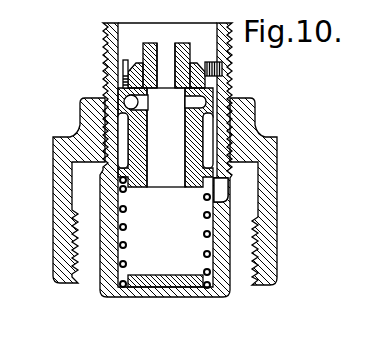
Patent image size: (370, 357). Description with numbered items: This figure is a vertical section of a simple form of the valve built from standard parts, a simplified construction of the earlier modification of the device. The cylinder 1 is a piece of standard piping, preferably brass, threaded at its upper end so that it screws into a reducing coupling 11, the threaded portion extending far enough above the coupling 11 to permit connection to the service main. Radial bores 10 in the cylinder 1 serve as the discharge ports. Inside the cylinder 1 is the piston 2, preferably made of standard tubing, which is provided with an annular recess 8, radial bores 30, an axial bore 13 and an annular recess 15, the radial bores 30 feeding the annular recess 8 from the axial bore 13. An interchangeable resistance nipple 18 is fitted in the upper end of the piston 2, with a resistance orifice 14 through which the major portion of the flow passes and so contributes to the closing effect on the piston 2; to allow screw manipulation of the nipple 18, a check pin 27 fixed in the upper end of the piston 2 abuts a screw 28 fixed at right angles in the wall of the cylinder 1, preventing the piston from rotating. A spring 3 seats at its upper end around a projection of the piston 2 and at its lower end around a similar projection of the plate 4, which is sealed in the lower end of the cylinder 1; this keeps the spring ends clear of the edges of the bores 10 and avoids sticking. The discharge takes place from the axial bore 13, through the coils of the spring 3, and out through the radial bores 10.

The cylinder 1 is at (100, 268).
The piston 2 is at (133, 152).
The spring 3 is at (128, 245).
The plate 4 is at (128, 293).
The annular recess 8 is at (124, 98).
The radial bores 10 is at (218, 192).
The reducing coupling 11 is at (55, 197).
The axial bore 13 is at (166, 137).
The resistance orifice 14 is at (167, 65).
The annular recess 15 is at (210, 135).
The resistance nipple 18 is at (187, 43).
The check pin 27 is at (125, 60).
The screw 28 is at (224, 66).
The radial bores 30 is at (199, 102).